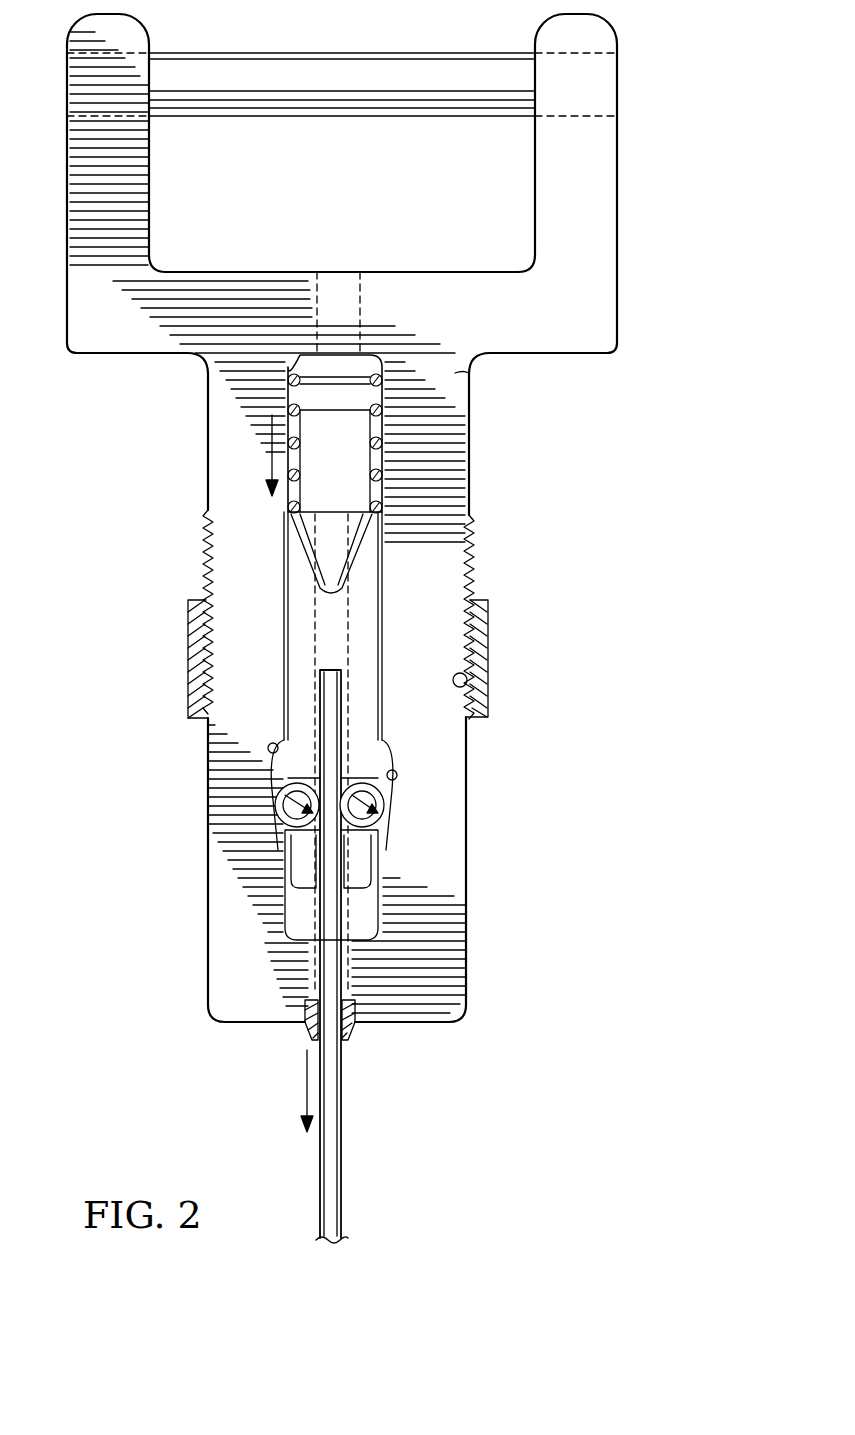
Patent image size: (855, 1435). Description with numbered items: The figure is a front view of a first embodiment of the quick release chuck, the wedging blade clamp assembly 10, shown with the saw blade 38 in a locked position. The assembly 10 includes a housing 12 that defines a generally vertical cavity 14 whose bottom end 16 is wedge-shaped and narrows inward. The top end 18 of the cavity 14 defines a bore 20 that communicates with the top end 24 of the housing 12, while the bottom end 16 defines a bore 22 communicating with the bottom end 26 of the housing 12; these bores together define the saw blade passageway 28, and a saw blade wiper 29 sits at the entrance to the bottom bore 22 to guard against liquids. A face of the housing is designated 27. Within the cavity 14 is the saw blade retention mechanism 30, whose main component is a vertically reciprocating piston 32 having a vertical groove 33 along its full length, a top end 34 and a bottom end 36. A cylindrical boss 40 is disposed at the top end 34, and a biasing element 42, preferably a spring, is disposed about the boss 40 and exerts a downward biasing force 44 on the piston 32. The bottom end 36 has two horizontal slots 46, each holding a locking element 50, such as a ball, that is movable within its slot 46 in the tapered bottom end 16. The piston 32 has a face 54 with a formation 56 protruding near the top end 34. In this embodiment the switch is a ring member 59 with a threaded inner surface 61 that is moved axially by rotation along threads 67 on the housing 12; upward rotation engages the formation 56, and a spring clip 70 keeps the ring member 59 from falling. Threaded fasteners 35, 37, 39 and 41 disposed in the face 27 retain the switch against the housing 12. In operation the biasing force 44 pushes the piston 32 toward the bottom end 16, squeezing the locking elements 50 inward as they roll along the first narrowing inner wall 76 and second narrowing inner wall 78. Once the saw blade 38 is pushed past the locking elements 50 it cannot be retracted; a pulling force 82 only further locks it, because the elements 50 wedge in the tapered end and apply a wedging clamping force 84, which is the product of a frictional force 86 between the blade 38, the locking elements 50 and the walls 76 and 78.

The wedging blade clamp assembly 10 is at (642, 58).
The housing 12 is at (597, 298).
The cavity 14 is at (267, 762).
The bottom end of the cavity 16 is at (377, 917).
The top end of the cavity 18 is at (287, 370).
The bore 20 is at (343, 298).
The bore 22 is at (303, 987).
The top end of the housing 24 is at (263, 292).
The bottom end of the housing 26 is at (467, 1005).
The face of the housing 27 is at (457, 374).
The saw blade passageway 28 is at (387, 867).
The saw blade wiper 29 is at (307, 1027).
The saw blade retention mechanism 30 is at (302, 556).
The piston 32 is at (383, 603).
The vertical groove 33 is at (353, 860).
The top end of the piston 34 is at (290, 506).
The threaded fastener 35 is at (244, 523).
The bottom end of the piston 36 is at (290, 860).
The threaded fastener 37 is at (421, 523).
The saw blade 38 is at (327, 1137).
The threaded fastener 39 is at (243, 735).
The cylindrical boss 40 is at (352, 441).
The threaded fastener 41 is at (421, 737).
The biasing element 42 is at (383, 404).
The downward biasing force 44 is at (272, 450).
The slot 46 is at (303, 875).
The locking element 50 is at (285, 798).
The face of the piston 54 is at (385, 578).
The formation 56 is at (352, 560).
The ring member 59 is at (488, 652).
The threaded inner surface 61 is at (470, 688).
The threads 67 is at (470, 577).
The spring clip 70 is at (190, 722).
The first narrowing inner wall 76 is at (275, 797).
The second narrowing inner wall 78 is at (398, 783).
The pulling force 82 is at (300, 1100).
The wedging clamping force 84 is at (300, 805).
The frictional force 86 is at (383, 825).